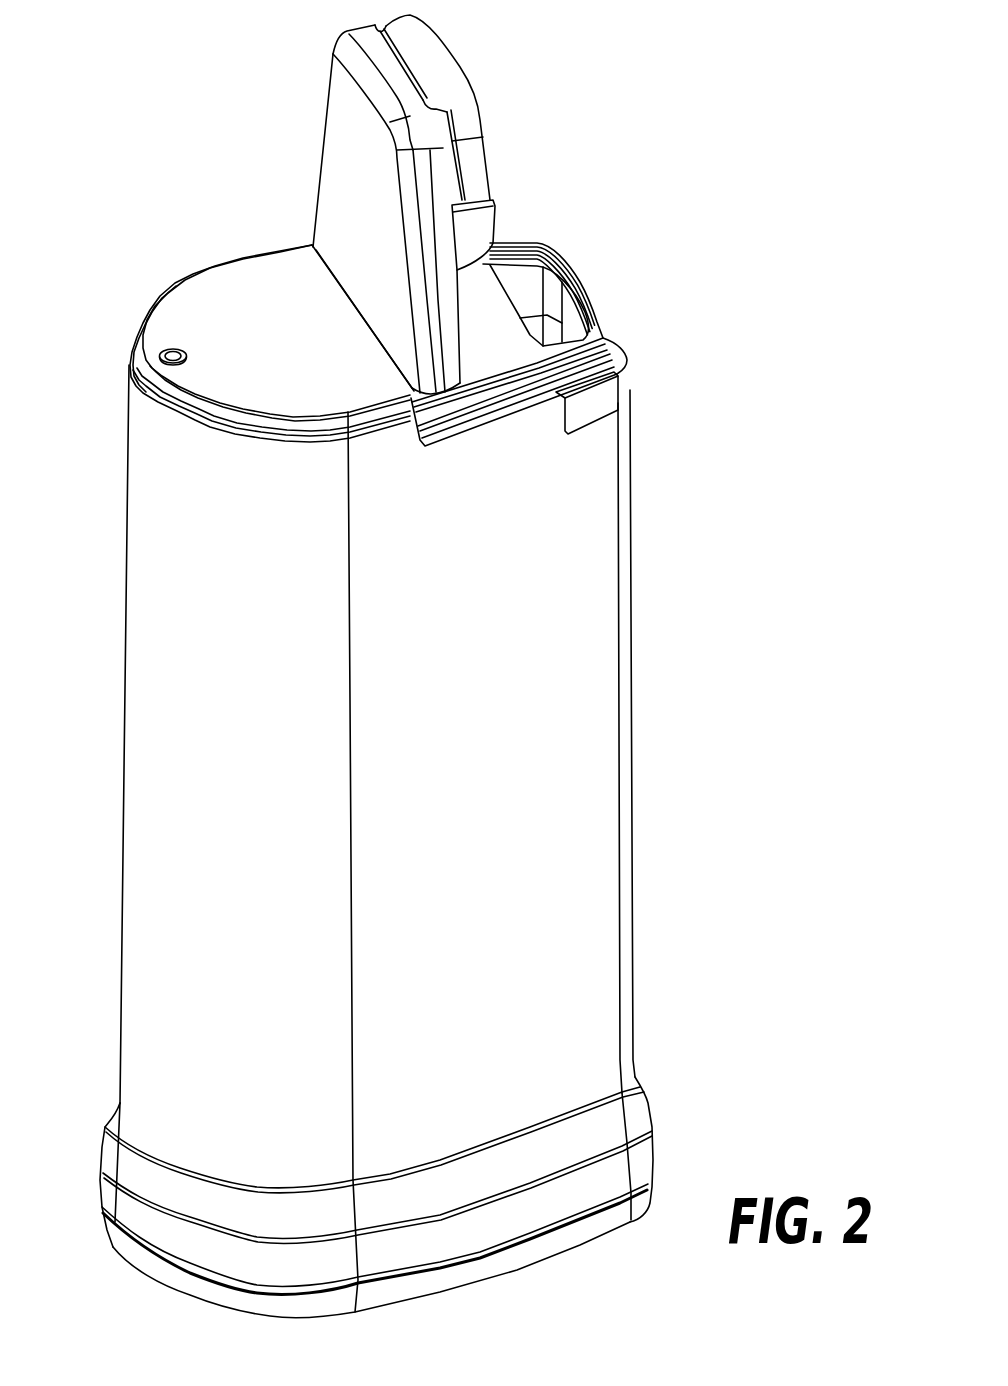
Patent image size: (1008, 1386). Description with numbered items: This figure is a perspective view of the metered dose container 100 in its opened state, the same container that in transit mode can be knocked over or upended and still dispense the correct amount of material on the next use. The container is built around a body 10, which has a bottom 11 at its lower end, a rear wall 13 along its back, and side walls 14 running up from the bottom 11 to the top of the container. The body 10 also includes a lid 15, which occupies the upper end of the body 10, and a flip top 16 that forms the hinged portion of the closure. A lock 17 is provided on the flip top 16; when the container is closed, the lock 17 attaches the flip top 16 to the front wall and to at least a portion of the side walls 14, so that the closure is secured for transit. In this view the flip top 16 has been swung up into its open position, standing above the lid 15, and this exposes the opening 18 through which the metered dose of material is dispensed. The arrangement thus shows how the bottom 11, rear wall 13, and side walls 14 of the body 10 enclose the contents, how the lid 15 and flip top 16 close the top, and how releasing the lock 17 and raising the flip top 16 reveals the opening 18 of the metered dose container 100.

The metered dose container 100 is at (119, 98).
The body 10 is at (501, 790).
The bottom 11 is at (513, 1270).
The rear wall 13 is at (124, 765).
The side walls 14 is at (592, 491).
The lid 15 is at (238, 285).
The flip top 16 is at (345, 112).
The lock 17 is at (447, 90).
The opening 18 is at (560, 308).